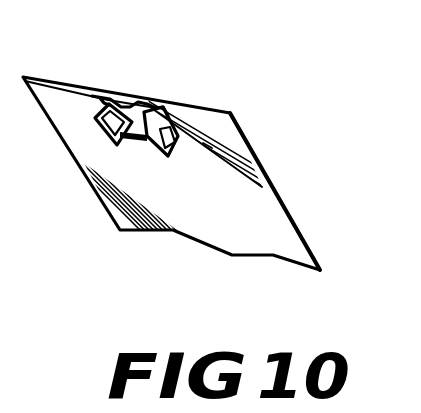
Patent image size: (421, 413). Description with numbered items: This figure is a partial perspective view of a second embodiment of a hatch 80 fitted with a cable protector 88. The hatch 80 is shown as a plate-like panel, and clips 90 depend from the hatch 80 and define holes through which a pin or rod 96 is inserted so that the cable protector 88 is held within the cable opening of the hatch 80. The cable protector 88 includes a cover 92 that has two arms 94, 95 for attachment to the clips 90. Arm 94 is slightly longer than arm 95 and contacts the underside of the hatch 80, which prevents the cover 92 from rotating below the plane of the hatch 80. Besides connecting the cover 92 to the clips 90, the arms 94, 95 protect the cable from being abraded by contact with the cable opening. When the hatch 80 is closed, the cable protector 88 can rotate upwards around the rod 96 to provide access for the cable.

The hatch 80 is at (186, 258).
The cable protector 88 is at (137, 128).
The clips 90 is at (103, 127).
The cover 92 is at (146, 97).
The arm 94 is at (109, 96).
The arm 95 is at (169, 116).
The rod 96 is at (135, 128).